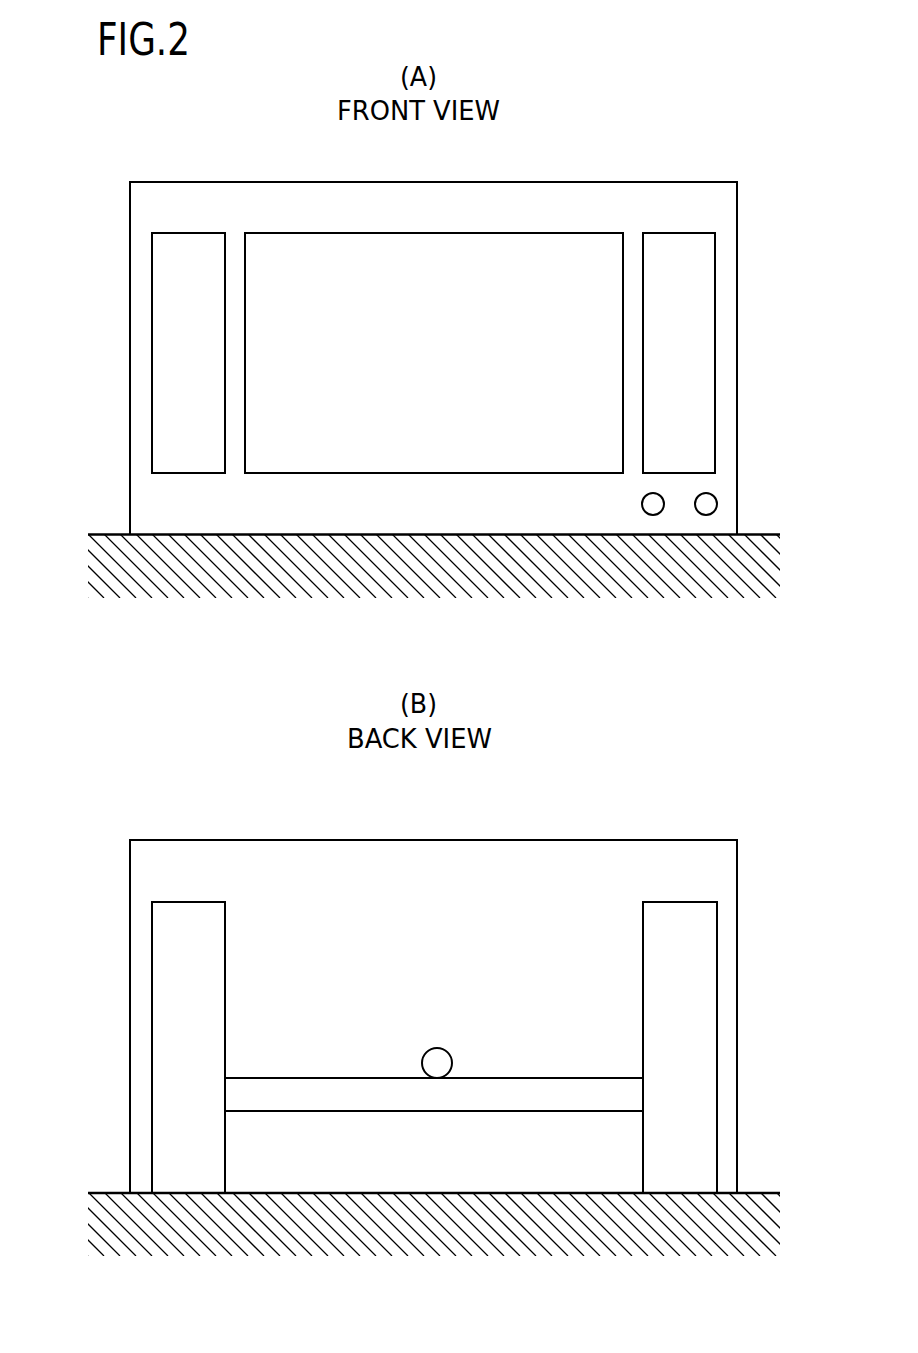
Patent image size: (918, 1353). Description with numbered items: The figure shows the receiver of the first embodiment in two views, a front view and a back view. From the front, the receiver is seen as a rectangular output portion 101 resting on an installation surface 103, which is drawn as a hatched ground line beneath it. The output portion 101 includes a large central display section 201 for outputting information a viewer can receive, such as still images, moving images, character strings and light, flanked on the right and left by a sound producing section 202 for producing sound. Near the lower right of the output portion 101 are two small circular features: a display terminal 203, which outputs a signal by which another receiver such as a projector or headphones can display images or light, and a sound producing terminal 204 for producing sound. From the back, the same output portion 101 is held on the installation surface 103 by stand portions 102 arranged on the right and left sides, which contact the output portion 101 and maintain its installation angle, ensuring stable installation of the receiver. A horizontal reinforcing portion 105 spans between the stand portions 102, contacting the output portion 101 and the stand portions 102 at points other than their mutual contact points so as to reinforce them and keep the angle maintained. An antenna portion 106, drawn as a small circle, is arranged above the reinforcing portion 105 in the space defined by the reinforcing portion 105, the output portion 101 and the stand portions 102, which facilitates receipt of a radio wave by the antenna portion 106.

The output portion 101 is at (256, 182).
The stand portions 102 is at (187, 902).
The installation surface 103 is at (117, 535).
The reinforcing portion 105 is at (502, 1078).
The antenna portion 106 is at (432, 1048).
The display section 201 is at (485, 233).
The sound producing section 202 is at (183, 233).
The display terminal 203 is at (653, 515).
The sound producing terminal 204 is at (706, 515).